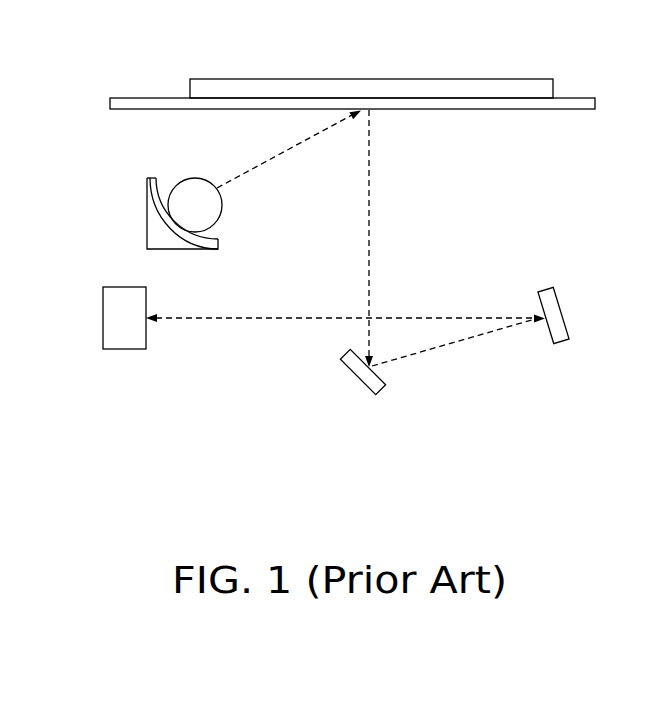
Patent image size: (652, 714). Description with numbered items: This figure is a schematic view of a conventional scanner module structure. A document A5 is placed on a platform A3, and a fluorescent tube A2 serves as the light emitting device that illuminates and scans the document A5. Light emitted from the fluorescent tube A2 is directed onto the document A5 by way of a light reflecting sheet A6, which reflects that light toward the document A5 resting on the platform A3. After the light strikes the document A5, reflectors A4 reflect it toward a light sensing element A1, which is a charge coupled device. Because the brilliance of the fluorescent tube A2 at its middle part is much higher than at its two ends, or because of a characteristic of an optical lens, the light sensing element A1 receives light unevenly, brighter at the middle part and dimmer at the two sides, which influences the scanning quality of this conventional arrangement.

The light sensing element A1 is at (129, 297).
The fluorescent tube A2 is at (198, 190).
The platform A3 is at (155, 105).
The reflectors A4 is at (362, 377).
The document A5 is at (372, 85).
The light reflecting sheet A6 is at (157, 188).